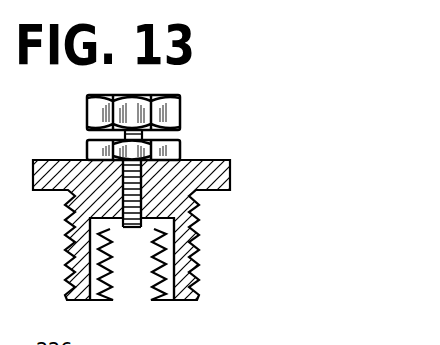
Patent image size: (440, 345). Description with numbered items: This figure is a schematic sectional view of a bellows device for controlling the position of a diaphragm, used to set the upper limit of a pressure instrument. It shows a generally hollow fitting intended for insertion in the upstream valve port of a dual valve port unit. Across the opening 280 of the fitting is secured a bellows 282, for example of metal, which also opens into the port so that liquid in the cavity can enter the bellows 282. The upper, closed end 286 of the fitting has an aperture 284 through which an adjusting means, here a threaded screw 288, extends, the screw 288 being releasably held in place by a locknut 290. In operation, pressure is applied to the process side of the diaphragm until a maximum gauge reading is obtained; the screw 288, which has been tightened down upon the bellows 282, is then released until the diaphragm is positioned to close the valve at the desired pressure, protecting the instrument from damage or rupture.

The opening 280 is at (147, 298).
The bellows 282 is at (112, 280).
The aperture 284 is at (137, 181).
The upper closed end 286 is at (62, 160).
The threaded screw 288 is at (167, 112).
The locknut 290 is at (90, 148).